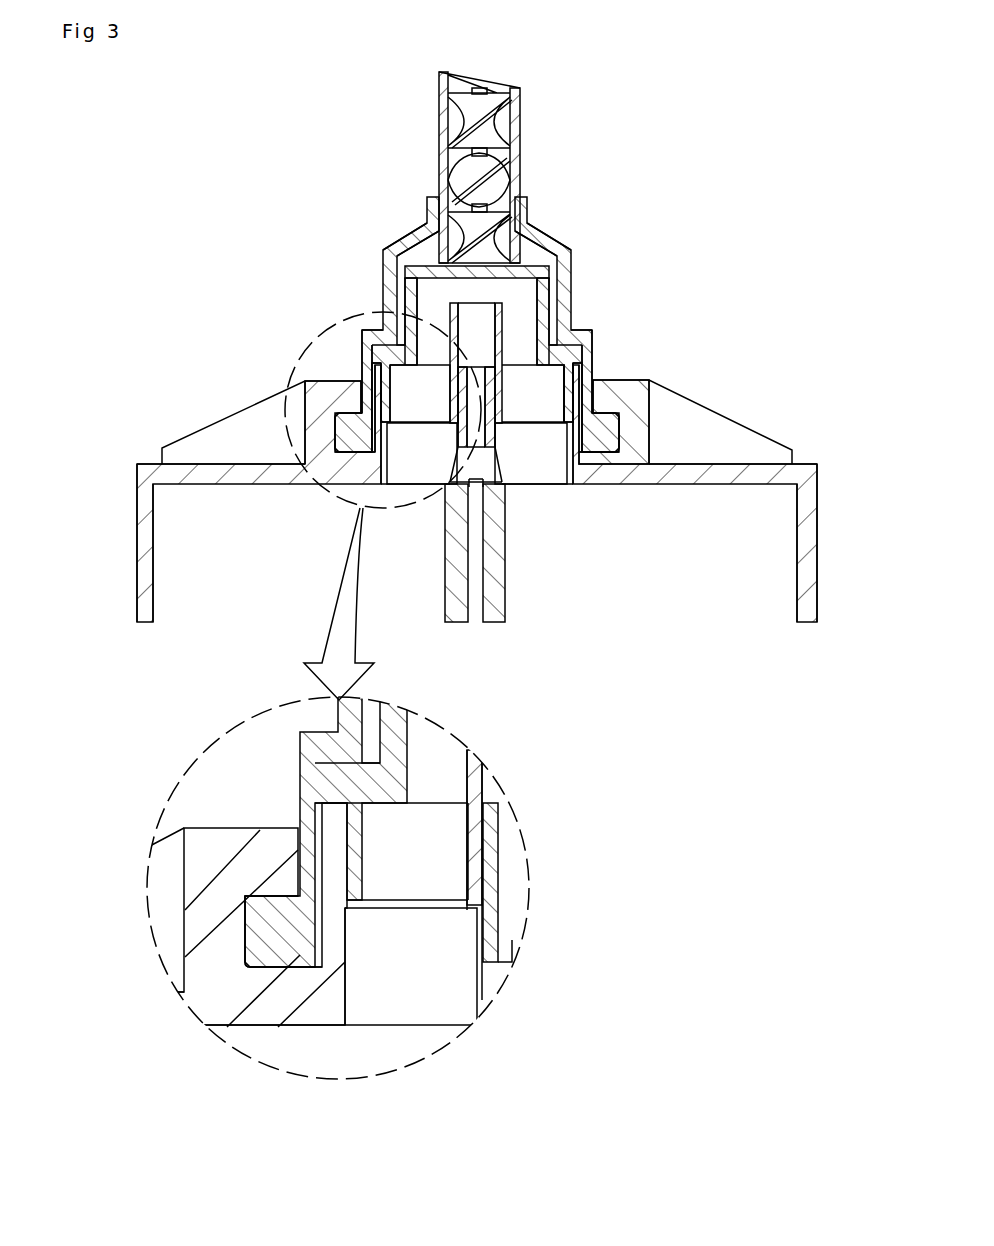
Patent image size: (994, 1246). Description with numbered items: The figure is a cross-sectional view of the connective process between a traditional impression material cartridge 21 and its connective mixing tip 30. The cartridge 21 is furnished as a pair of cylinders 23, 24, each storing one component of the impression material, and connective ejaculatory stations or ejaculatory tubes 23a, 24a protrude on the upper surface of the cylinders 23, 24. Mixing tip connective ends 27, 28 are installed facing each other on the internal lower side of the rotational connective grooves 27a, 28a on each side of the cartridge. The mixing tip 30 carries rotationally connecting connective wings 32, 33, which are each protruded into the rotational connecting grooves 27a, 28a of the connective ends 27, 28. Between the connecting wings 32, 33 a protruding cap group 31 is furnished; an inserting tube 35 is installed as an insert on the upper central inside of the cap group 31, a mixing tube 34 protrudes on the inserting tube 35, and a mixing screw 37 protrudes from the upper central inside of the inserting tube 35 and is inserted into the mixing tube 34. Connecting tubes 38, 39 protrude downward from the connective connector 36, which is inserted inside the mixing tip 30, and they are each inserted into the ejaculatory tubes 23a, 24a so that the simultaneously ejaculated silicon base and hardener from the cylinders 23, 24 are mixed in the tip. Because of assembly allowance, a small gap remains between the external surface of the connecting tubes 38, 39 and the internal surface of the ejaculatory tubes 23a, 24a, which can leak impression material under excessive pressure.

The impression material cartridge 21 is at (140, 478).
The cylinder 23 is at (143, 547).
The cylinder 24 is at (807, 548).
The ejaculatory tube 23a is at (378, 405).
The ejaculatory tube 24a is at (620, 392).
The mixing tip connective end 27 is at (340, 387).
The mixing tip connective end 28 is at (640, 379).
The rotational connective groove 27a is at (362, 473).
The rotational connective groove 28a is at (587, 453).
The connective mixing tip 30 is at (550, 226).
The cap group 31 is at (577, 257).
The connective wing 32 is at (347, 430).
The connective wing 33 is at (597, 430).
The mixing tube 34 is at (515, 122).
The inserting tube 35 is at (553, 292).
The connective connector 36 is at (573, 340).
The mixing screw 37 is at (439, 112).
The connecting tube 38 is at (445, 335).
The connecting tube 39 is at (633, 388).